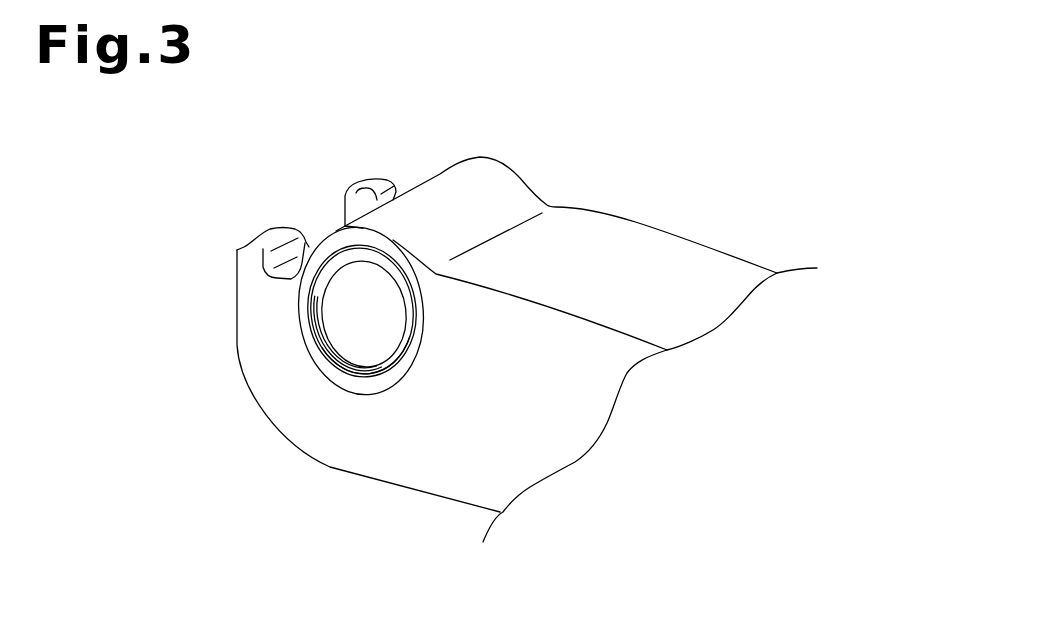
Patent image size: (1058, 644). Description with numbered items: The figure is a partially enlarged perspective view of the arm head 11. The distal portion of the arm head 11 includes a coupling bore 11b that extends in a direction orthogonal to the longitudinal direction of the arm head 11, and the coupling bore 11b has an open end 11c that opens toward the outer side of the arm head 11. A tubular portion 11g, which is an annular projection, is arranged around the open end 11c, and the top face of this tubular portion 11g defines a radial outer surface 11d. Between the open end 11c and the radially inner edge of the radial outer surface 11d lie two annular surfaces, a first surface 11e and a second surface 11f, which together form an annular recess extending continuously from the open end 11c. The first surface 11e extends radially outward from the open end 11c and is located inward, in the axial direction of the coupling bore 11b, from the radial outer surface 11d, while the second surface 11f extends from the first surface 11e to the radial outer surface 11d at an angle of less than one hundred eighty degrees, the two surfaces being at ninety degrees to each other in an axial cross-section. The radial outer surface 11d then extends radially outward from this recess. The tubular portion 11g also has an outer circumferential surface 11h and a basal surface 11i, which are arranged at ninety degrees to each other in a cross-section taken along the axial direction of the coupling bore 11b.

The arm head 11 is at (637, 218).
The coupling bore 11b is at (360, 382).
The open end 11c is at (359, 333).
The radial outer surface 11d is at (307, 330).
The first surface 11e is at (343, 376).
The second surface 11f is at (321, 356).
The tubular portion 11g is at (410, 342).
The outer circumferential surface 11h is at (379, 259).
The basal surface 11i is at (363, 228).